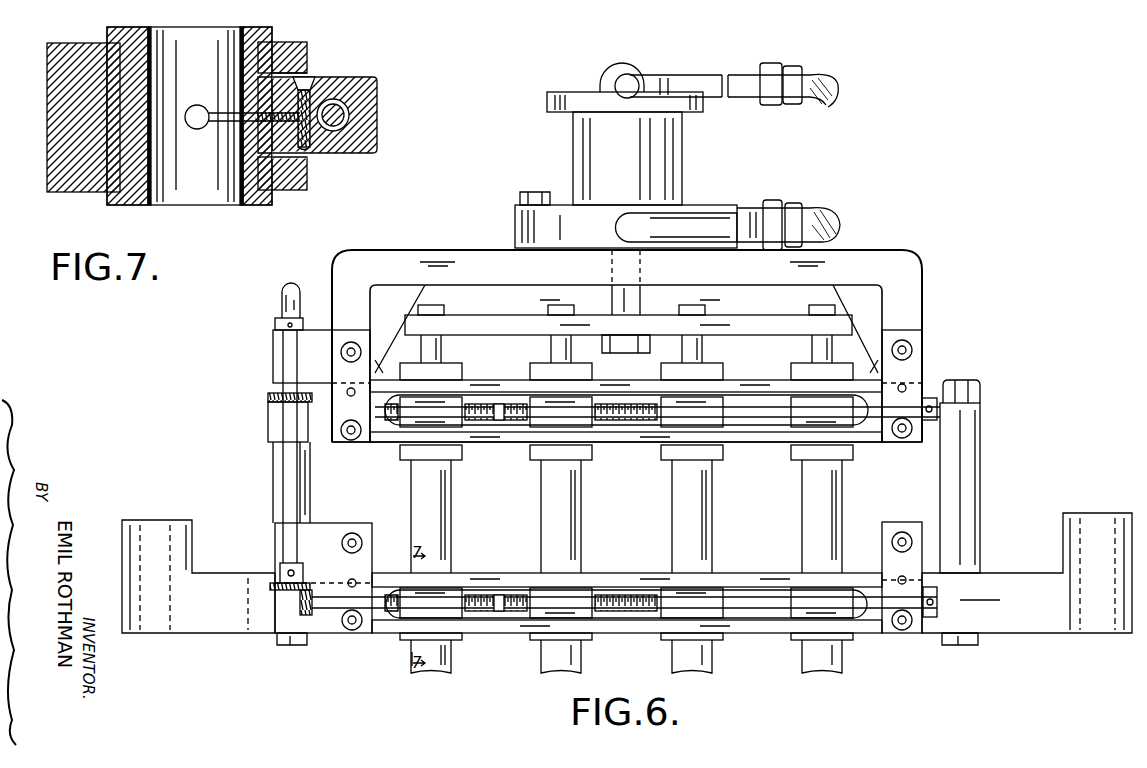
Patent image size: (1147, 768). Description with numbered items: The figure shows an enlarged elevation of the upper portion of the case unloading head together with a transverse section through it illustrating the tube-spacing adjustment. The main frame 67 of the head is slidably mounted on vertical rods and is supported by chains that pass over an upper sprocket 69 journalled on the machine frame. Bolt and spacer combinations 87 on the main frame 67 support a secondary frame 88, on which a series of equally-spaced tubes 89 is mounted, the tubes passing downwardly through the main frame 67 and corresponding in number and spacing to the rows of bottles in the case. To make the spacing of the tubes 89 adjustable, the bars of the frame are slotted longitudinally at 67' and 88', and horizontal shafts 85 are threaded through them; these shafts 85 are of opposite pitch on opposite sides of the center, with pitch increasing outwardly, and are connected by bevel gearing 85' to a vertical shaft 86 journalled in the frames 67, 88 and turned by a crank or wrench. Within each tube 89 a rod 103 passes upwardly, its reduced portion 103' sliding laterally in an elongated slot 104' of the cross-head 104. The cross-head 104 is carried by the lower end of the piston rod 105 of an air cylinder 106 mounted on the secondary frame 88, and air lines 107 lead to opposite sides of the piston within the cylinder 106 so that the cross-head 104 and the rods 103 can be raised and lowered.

In FIG. 7, the main frame 67 is at (212, 116).
In FIG. 6, the main frame 67 is at (626, 507).
In FIG. 7, the longitudinal slot 67' is at (306, 60).
In FIG. 6, the longitudinal slot 67' is at (510, 507).
In FIG. 6, the upper sprocket 69 is at (292, 286).
In FIG. 7, the horizontal shaft 85 is at (294, 113).
In FIG. 6, the horizontal shaft 85 is at (626, 477).
In FIG. 6, the bevel gearing 85' is at (274, 507).
In FIG. 6, the vertical shaft 86 is at (283, 474).
In FIG. 6, the bolt and spacer combination 87 is at (311, 490).
In FIG. 6, the secondary frame 88 is at (627, 334).
In FIG. 6, the longitudinal slot 88' is at (626, 496).
In FIG. 6, the tube 89 is at (452, 516).
In FIG. 6, the rod 103 is at (626, 357).
In FIG. 6, the reduced portion 103' is at (626, 300).
In FIG. 6, the cross-head 104 is at (628, 312).
In FIG. 6, the elongated slot 104' is at (626, 329).
In FIG. 6, the piston rod 105 is at (643, 303).
In FIG. 6, the air cylinder 106 is at (683, 168).
In FIG. 6, the air line 107 is at (822, 105).